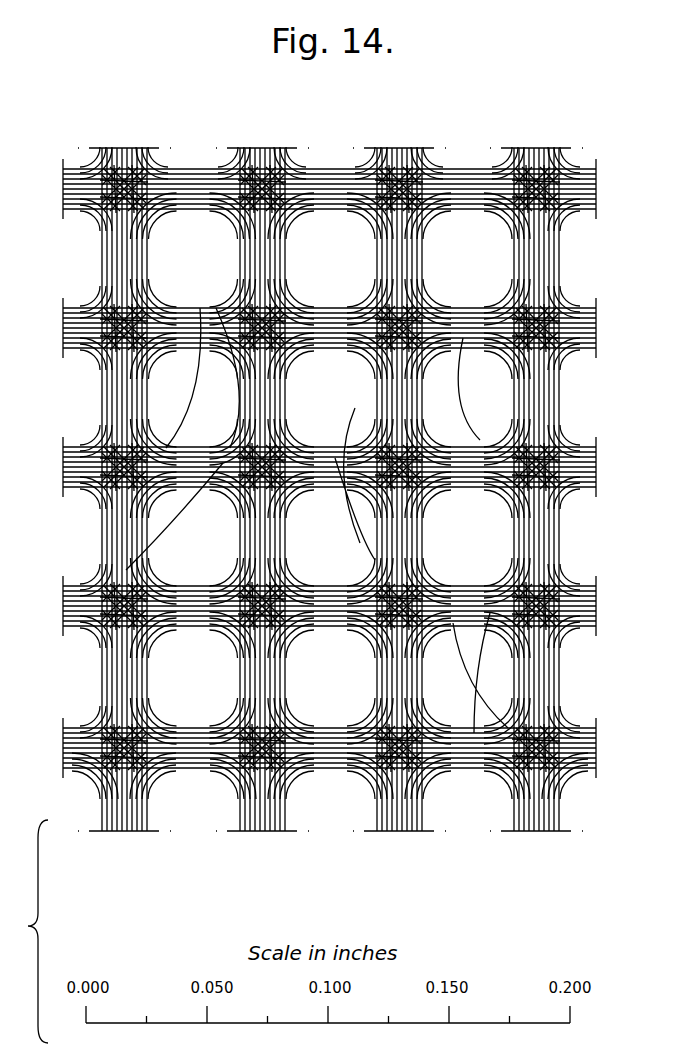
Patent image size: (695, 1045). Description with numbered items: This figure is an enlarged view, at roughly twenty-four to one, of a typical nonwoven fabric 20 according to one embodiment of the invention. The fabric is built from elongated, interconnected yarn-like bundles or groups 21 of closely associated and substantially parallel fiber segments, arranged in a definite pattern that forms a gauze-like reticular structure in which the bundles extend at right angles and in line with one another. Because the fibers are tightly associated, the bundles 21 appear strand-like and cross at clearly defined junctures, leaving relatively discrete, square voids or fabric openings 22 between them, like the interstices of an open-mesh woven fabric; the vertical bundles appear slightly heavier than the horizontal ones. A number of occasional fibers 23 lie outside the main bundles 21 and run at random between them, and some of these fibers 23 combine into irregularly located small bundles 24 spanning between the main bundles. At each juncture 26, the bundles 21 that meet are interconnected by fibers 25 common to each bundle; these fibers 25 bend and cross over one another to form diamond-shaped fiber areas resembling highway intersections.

The nonwoven fabric 20 is at (550, 128).
The bundles or groups of fiber segments 21 is at (311, 222).
The fabric openings 22 is at (173, 221).
The occasional fibers 23 is at (163, 393).
The small bundles 24 is at (470, 412).
The interconnecting fibers 25 is at (538, 565).
The juncture 26 is at (87, 617).